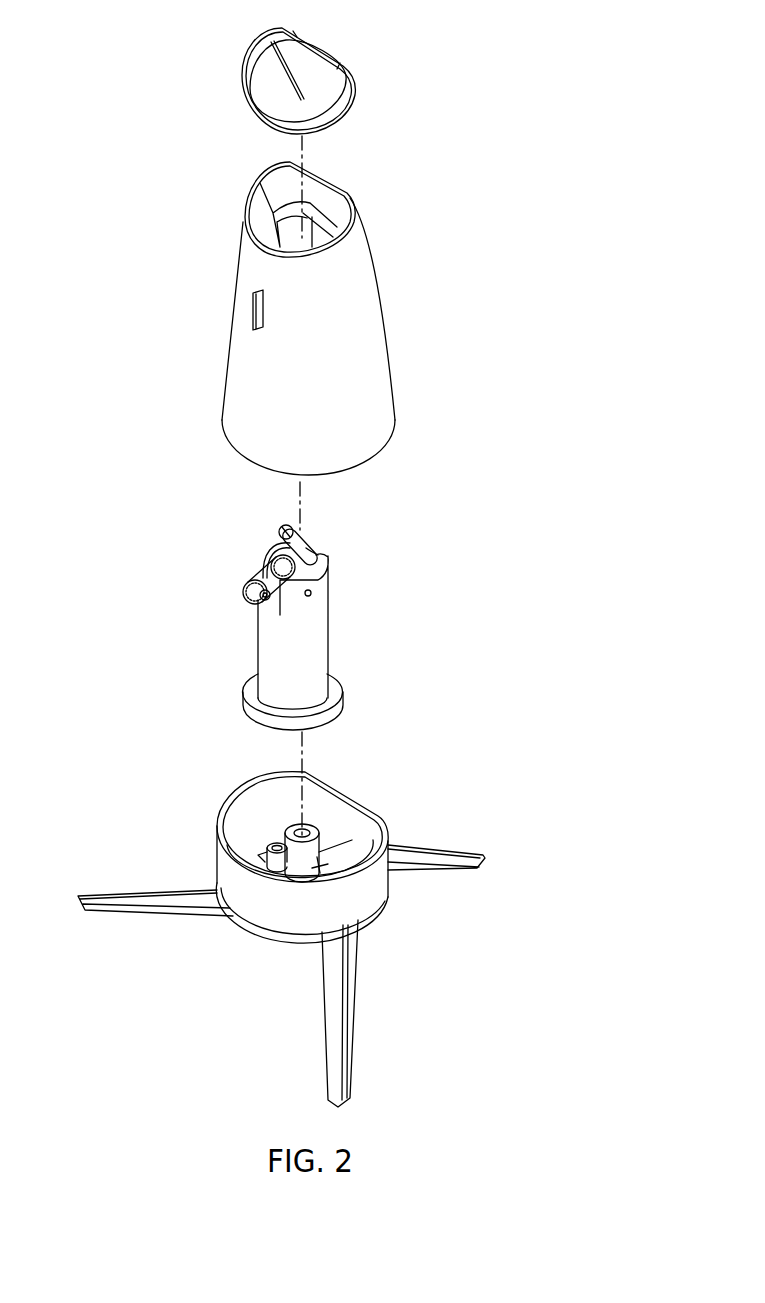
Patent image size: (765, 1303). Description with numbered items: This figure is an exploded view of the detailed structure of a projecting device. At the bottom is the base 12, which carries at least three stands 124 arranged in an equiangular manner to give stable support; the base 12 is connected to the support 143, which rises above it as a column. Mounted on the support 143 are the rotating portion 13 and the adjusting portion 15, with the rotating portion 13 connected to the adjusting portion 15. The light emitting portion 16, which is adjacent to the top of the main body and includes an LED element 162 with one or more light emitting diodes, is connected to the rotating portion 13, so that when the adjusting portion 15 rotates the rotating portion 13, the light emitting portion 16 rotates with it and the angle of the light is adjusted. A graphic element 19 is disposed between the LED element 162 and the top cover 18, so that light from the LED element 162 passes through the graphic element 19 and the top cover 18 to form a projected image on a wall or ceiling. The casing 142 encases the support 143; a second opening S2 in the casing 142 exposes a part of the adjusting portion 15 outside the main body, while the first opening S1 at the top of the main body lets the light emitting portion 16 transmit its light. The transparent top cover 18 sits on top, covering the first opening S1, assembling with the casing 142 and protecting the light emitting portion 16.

The base 12 is at (405, 927).
The stand 124 is at (456, 856).
The rotating portion 13 is at (267, 560).
The casing 142 is at (248, 365).
The support 143 is at (308, 643).
The adjusting portion 15 is at (243, 602).
The light emitting portion 16 is at (296, 536).
The LED element 162 is at (313, 540).
The top cover 18 is at (262, 85).
The graphic element 19 is at (279, 528).
The first opening S1 is at (283, 183).
The second opening S2 is at (255, 312).